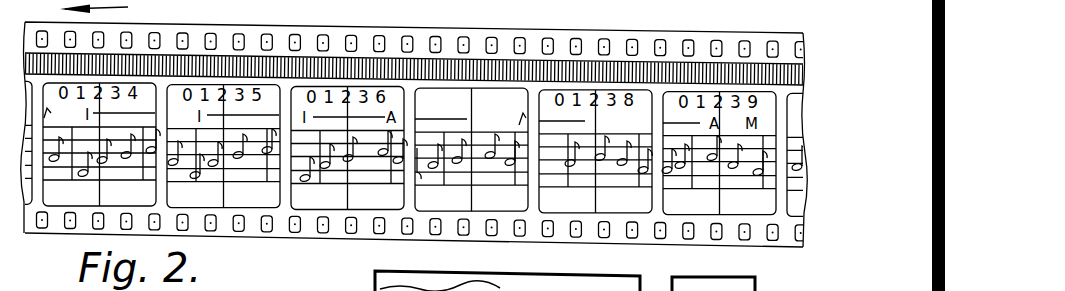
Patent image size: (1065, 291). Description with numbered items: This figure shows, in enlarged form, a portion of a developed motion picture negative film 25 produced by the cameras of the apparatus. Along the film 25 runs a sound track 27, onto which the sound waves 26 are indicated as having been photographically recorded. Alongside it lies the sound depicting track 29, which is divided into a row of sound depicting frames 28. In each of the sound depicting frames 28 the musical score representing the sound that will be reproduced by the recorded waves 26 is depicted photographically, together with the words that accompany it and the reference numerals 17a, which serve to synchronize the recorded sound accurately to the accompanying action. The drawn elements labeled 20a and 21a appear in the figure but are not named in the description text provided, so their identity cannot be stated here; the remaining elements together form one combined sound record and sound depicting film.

The reference numerals 17a is at (461, 95).
The musical notation 20a is at (338, 178).
The word indicia 21a is at (618, 103).
The motion picture negative film 25 is at (367, 43).
The sound waves 26 is at (252, 62).
The sound track 27 is at (188, 62).
The sound depicting frames 28 is at (493, 202).
The sound depicting track 29 is at (407, 196).